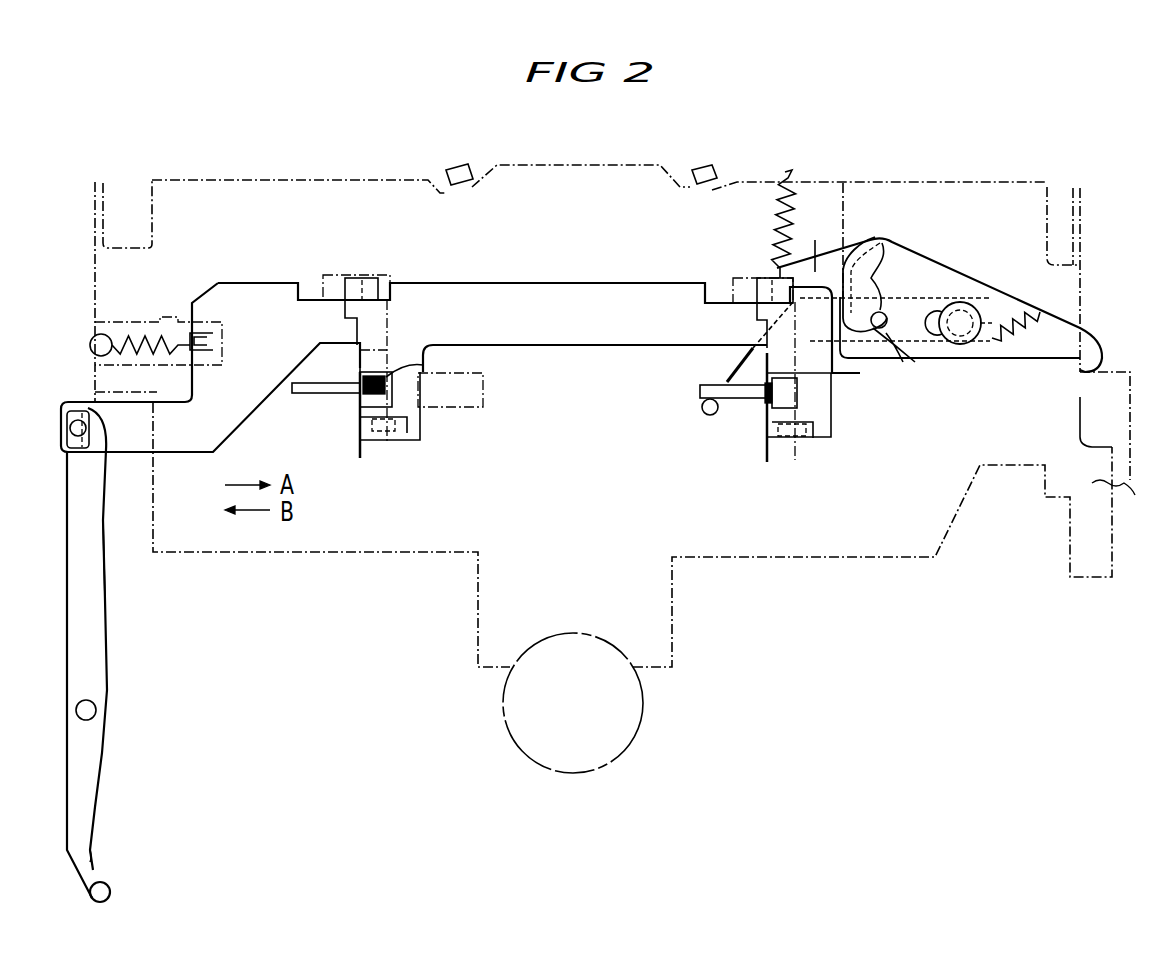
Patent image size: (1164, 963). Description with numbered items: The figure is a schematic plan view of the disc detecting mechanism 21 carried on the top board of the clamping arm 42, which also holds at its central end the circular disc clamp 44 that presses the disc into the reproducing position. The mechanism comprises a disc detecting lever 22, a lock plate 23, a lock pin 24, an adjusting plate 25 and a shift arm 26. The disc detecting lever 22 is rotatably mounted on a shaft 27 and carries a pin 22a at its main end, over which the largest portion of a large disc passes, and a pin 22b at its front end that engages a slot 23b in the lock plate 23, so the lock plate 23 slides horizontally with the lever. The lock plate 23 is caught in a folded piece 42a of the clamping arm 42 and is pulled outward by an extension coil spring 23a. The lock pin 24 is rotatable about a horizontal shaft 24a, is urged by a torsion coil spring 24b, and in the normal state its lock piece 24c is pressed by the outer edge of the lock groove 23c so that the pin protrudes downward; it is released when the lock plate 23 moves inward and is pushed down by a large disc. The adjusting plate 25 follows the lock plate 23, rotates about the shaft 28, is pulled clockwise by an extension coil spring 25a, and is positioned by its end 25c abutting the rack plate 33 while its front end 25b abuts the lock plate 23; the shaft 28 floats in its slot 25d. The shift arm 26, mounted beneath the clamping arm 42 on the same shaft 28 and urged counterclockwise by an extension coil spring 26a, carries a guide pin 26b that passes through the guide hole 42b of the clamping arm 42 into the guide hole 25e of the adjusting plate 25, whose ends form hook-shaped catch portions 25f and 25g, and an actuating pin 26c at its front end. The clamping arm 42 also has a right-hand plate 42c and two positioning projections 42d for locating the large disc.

The disc detecting mechanism 21 is at (230, 278).
The disc detecting lever 22 is at (97, 632).
The pin 22a is at (97, 857).
The pin 22b is at (107, 512).
The lock plate 23 is at (447, 298).
The extension coil spring 23a is at (150, 330).
The slot 23b is at (90, 454).
The lock groove 23c is at (410, 372).
The lock pin 24 is at (386, 397).
The horizontal shaft 24a is at (700, 392).
The torsion coil spring 24b is at (763, 400).
The lock piece 24c is at (393, 347).
The adjusting plate 25 is at (923, 265).
The extension coil spring 25a is at (778, 278).
The front end 25b is at (820, 239).
The end 25c is at (1098, 358).
The slot 25d is at (938, 312).
The guide hole 25e is at (866, 233).
The catch portion 25f is at (885, 331).
The catch portion 25g is at (887, 238).
The shift arm 26 is at (736, 379).
The extension coil spring 26a is at (1023, 330).
The guide pin 26b is at (905, 352).
The actuating pin 26c is at (710, 415).
The shaft 27 is at (92, 712).
The shaft 28 is at (963, 313).
The rack plate 33 is at (1122, 507).
The clamping arm 42 is at (673, 645).
The folded piece 42a is at (800, 440).
The guide hole 42b is at (843, 210).
The right-hand plate 42c is at (1106, 262).
The positioning projections 42d is at (701, 170).
The disc clamp 44 is at (640, 725).